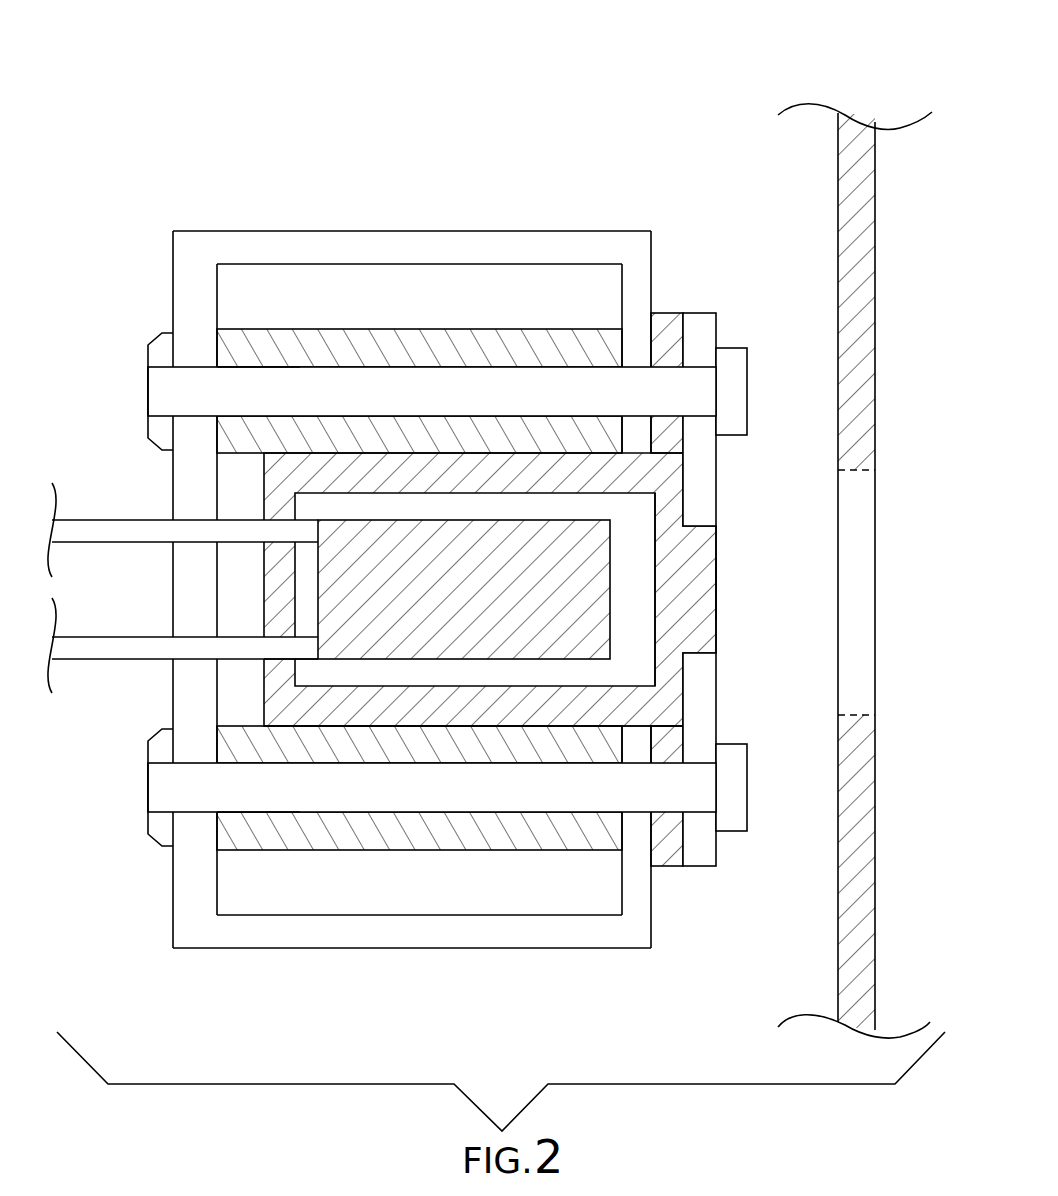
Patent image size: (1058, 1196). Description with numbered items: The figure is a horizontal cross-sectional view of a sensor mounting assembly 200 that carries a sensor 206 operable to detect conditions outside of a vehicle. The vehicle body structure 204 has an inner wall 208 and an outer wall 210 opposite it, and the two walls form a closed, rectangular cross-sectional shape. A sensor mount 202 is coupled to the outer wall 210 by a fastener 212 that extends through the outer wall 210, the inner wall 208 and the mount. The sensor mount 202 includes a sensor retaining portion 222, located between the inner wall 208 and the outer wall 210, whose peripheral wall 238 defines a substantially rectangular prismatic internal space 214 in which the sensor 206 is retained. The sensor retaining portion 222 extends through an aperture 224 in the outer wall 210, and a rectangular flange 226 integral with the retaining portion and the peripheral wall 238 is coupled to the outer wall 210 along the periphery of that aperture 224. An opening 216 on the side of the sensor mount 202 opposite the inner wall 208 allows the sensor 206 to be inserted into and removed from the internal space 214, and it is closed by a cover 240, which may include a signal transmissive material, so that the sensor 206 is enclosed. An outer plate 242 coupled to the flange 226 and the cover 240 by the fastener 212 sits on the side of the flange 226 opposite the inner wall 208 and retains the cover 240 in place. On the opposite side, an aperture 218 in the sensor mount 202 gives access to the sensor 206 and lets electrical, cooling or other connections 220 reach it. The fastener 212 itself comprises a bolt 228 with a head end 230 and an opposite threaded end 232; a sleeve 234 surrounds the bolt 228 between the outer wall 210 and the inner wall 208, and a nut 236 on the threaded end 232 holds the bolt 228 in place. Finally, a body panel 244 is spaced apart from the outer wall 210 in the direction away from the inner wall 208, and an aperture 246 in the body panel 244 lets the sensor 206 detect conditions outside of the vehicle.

The sensor mounting assembly 200 is at (500, 97).
The sensor mount 202 is at (455, 727).
The vehicle body structure 204 is at (530, 949).
The sensor 206 is at (376, 660).
The inner wall 208 is at (172, 286).
The outer wall 210 is at (652, 256).
The fastener 212 is at (332, 366).
The internal space 214 is at (402, 497).
The opening 216 is at (727, 541).
The aperture 218 is at (282, 661).
The connections 220 is at (98, 637).
The sensor retaining portion 222 is at (510, 451).
The aperture 224 is at (735, 582).
The flange 226 is at (668, 312).
The bolt 228 is at (262, 366).
The head end 230 is at (748, 378).
The threaded end 232 is at (148, 383).
The sleeve 234 is at (548, 328).
The nut 236 is at (148, 436).
The peripheral wall 238 is at (576, 727).
The cover 240 is at (656, 645).
The outer plate 242 is at (717, 676).
The body panel 244 is at (876, 247).
The aperture 246 is at (877, 545).